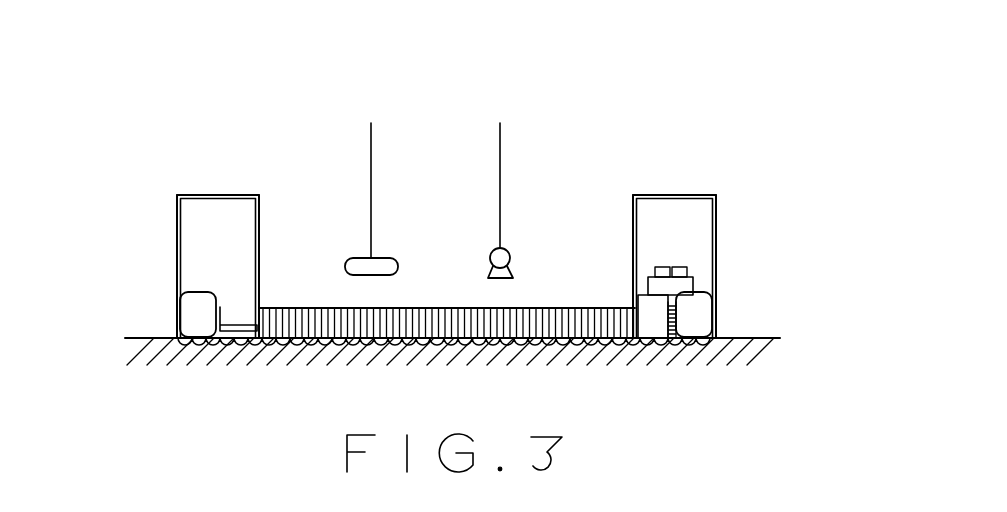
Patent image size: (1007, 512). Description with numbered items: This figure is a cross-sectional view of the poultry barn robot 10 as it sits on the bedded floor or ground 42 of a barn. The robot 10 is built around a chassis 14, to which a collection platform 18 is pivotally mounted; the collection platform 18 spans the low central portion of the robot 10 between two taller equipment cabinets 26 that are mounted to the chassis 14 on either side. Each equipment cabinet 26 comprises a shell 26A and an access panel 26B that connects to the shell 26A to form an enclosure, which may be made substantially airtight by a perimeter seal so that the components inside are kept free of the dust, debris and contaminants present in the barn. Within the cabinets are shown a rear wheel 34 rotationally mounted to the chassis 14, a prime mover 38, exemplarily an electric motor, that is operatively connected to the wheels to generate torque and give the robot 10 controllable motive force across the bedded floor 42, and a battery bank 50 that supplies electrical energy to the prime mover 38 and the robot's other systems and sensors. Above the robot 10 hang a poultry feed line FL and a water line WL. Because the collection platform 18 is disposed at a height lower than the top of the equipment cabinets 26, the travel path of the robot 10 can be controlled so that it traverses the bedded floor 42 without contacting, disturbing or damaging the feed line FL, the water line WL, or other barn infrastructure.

The robot 10 is at (703, 106).
The chassis 14 is at (240, 323).
The collection platform 18 is at (478, 306).
The equipment cabinet 26 is at (250, 210).
The shell 26A is at (233, 196).
The access panel 26B is at (177, 228).
The rear wheel 34 is at (198, 300).
The prime mover 38 is at (657, 307).
The bedded floor or ground 42 is at (147, 337).
The battery bank 50 is at (653, 283).
The feed line FL is at (372, 175).
The water line WL is at (500, 143).